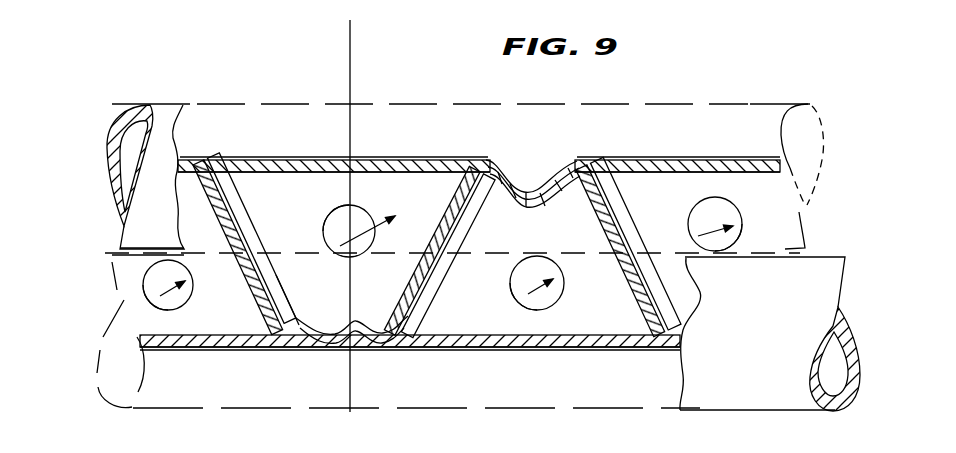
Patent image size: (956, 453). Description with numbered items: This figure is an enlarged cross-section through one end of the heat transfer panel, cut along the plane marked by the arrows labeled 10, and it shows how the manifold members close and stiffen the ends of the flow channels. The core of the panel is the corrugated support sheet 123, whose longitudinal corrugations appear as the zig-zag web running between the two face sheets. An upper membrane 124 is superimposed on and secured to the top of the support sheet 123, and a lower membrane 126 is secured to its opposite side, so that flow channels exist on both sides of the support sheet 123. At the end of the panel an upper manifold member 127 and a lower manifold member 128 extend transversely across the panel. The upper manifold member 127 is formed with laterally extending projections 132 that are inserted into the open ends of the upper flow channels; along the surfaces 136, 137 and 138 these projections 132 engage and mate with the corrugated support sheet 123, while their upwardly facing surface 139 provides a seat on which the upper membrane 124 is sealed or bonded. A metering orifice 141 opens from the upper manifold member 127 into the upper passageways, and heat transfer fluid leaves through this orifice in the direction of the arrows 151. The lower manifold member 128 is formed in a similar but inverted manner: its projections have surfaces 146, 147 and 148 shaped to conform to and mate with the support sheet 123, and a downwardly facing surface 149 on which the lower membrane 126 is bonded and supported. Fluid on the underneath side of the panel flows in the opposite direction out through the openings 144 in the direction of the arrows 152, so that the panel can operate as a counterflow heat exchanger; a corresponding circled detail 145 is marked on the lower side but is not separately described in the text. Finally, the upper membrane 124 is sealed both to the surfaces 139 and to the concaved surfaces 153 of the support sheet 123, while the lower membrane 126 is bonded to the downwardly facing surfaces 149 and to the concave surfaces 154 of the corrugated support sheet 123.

The section line / panel 10 is at (350, 52).
The corrugated support sheet 123 is at (256, 231).
The upper membrane 124 is at (370, 160).
The lower membrane 126 is at (390, 348).
The upper manifold member 127 is at (151, 104).
The lower manifold member 128 is at (790, 358).
The lateral projections 132 is at (437, 170).
The engaging surface 136 is at (296, 284).
The engaging surface 137 is at (343, 348).
The engaging surface 138 is at (421, 313).
The upwardly facing surface 139 is at (248, 160).
The metering orifice 141 is at (358, 208).
The lower manifold openings 144 is at (158, 350).
The bend direction detail 145 is at (193, 277).
The conforming surface 146 is at (458, 212).
The conforming surface 147 is at (543, 164).
The conforming surface 148 is at (232, 214).
The downwardly facing surface 149 is at (225, 350).
The flow direction arrows 151 is at (374, 236).
The flow direction arrows 152 is at (233, 317).
The concaved surfaces 153 is at (534, 172).
The concave surfaces 154 is at (416, 395).